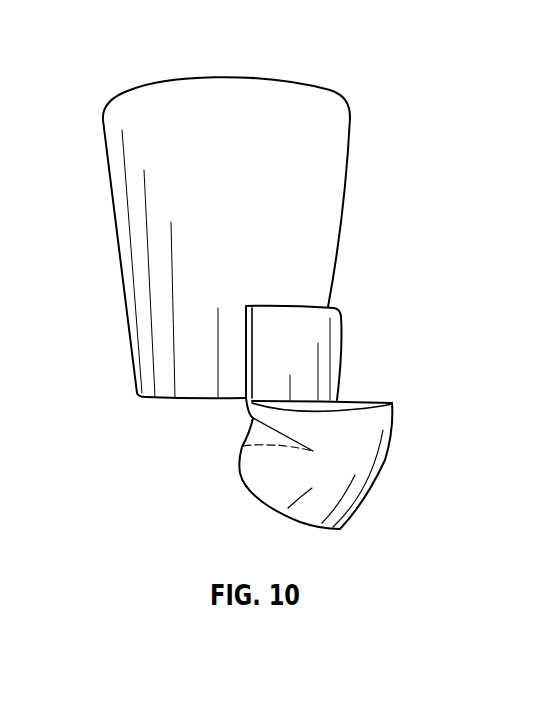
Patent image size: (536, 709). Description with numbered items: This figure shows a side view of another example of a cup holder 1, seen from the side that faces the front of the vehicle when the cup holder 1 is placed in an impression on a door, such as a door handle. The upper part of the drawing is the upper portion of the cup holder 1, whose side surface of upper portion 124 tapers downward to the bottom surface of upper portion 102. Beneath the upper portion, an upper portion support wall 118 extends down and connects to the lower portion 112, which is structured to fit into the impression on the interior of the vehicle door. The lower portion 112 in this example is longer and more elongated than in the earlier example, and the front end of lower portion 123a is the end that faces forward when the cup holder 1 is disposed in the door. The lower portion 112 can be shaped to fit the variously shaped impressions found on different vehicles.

The cup holder 1 is at (229, 75).
The side surface of upper portion 124 is at (347, 147).
The bottom surface of upper portion 102 is at (167, 402).
The upper portion support wall 118 is at (344, 322).
The lower portion 112 is at (239, 458).
The front end of lower portion 123a is at (291, 500).